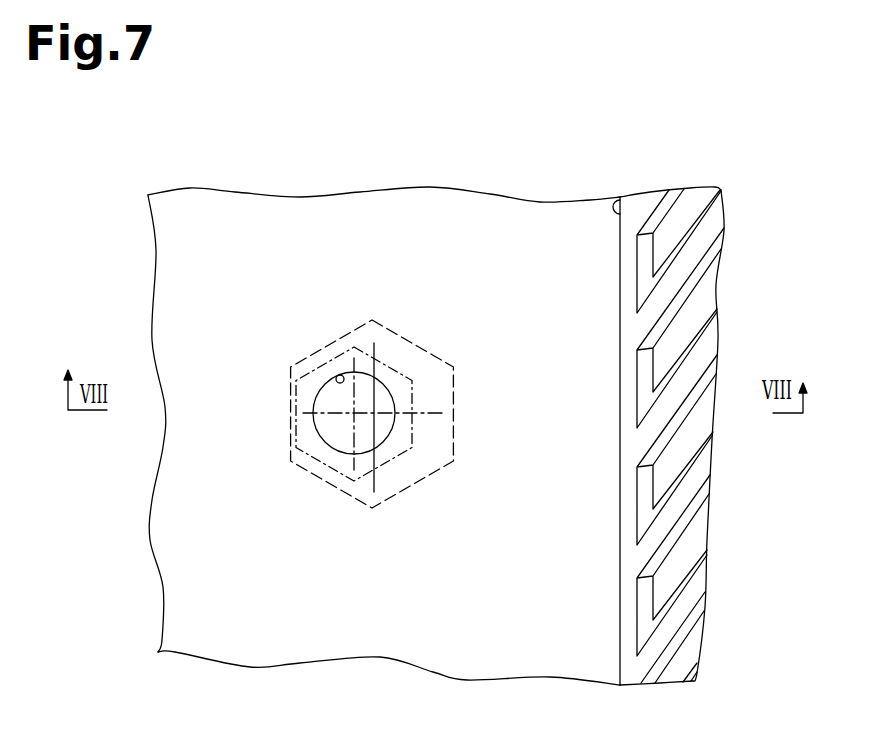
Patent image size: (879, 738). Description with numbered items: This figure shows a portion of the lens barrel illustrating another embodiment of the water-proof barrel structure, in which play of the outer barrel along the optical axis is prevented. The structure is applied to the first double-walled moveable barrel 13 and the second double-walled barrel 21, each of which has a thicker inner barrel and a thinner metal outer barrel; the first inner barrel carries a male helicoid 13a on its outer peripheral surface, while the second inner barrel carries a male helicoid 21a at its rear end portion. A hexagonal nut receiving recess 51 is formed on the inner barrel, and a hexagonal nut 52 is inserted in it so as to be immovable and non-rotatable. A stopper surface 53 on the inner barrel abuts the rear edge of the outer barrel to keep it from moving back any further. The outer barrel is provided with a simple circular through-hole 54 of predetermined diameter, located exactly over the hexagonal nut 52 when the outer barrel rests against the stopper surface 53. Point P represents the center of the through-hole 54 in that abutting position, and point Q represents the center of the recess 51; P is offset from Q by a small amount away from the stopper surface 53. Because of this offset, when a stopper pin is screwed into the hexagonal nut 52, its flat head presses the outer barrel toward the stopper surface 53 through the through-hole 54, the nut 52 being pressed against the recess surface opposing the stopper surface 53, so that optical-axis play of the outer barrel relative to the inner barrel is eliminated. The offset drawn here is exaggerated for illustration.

The first double-walled moveable barrel 13 is at (384, 417).
The second double-walled barrel 21 is at (488, 215).
The male helicoid 21a is at (706, 436).
The male helicoid 13a is at (707, 291).
The stopper surface 53 is at (616, 199).
The hexagonal nut receiving recess 51 is at (451, 409).
The hexagonal nut 52 is at (305, 397).
The circular through-hole 54 is at (337, 376).
The center of the circular through-hole P is at (352, 412).
The center of the hexagonal nut receiving recess Q is at (375, 411).